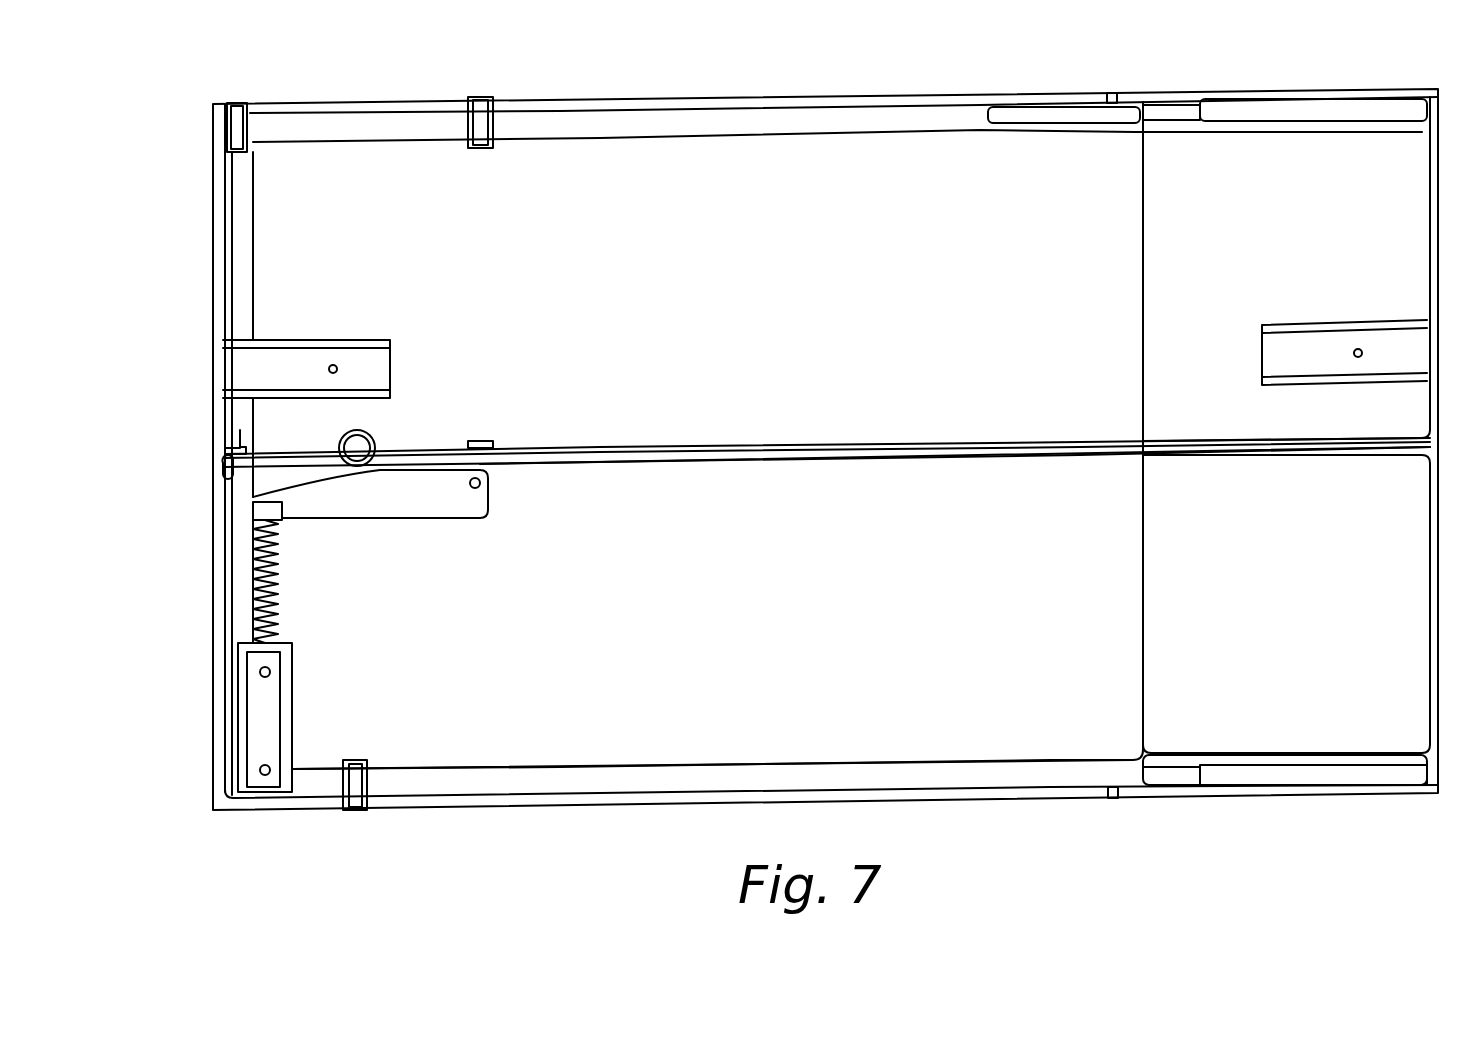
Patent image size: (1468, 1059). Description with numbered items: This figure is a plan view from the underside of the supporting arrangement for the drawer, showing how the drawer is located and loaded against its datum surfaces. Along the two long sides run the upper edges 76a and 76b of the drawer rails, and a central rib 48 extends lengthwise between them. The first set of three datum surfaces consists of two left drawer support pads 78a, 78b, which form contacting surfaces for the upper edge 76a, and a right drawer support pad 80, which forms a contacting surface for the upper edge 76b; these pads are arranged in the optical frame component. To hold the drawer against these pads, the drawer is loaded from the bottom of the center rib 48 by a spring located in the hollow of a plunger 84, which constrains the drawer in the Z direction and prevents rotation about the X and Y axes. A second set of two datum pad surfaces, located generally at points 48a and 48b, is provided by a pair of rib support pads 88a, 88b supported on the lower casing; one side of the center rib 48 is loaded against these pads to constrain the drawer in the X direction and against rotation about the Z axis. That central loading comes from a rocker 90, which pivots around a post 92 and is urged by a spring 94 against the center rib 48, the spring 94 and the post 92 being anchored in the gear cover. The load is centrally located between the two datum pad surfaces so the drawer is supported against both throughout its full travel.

The center rib 48 is at (1052, 455).
The datum surface point 48a is at (223, 472).
The datum surface point 48b is at (495, 462).
The upper edge 76a is at (400, 108).
The upper edge 76b is at (473, 788).
The left drawer support pad 78a is at (238, 103).
The left drawer support pad 78b is at (480, 97).
The right drawer support pad 80 is at (355, 811).
The plunger 84 is at (368, 438).
The rib support pad 88a is at (240, 448).
The rib support pad 88b is at (483, 441).
The rocker 90 is at (447, 495).
The post 92 is at (481, 487).
The spring 94 is at (378, 470).